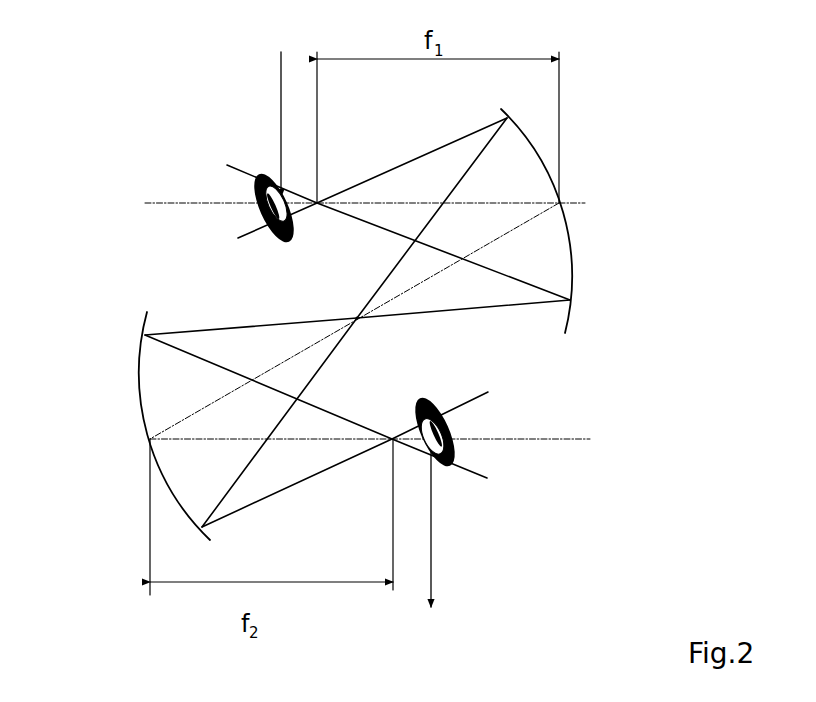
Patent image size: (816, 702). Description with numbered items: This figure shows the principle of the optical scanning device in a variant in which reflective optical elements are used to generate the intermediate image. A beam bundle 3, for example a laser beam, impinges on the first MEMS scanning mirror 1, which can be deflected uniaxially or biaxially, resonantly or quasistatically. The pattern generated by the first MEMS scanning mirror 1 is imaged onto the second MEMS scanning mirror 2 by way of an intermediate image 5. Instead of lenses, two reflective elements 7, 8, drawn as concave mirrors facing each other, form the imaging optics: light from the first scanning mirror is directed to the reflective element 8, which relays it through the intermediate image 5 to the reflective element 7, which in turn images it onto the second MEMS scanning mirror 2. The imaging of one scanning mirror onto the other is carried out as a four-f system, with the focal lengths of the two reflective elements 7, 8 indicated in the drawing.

The MEMS scanning mirror 1 is at (258, 202).
The MEMS scanning mirror 2 is at (452, 453).
The beam bundle 3 is at (279, 123).
The intermediate image 5 is at (357, 318).
The reflective element 7 is at (138, 368).
The reflective element 8 is at (568, 325).